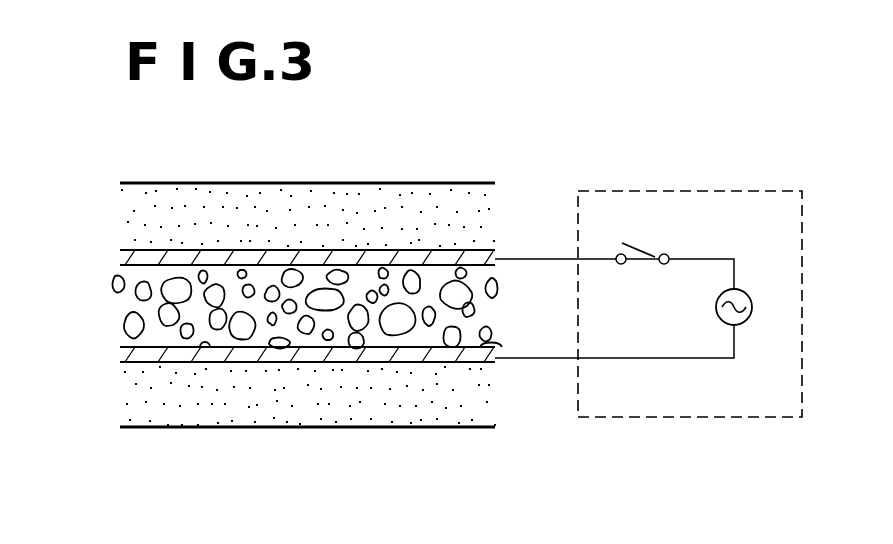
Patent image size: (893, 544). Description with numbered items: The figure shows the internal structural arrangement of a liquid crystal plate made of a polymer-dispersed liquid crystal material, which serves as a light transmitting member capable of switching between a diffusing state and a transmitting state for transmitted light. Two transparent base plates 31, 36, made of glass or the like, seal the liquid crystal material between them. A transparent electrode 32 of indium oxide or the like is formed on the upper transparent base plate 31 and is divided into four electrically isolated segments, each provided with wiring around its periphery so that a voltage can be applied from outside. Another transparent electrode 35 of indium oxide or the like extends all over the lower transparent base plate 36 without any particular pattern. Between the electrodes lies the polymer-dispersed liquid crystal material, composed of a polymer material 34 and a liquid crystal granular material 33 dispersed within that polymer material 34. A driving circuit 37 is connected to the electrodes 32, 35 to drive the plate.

The transparent base plate 31 is at (121, 218).
The transparent electrode 32 is at (120, 257).
The liquid crystal granular material 33 is at (112, 285).
The polymer material 34 is at (273, 307).
The transparent electrode 35 is at (120, 352).
The transparent base plate 36 is at (120, 392).
The driving circuit 37 is at (714, 418).